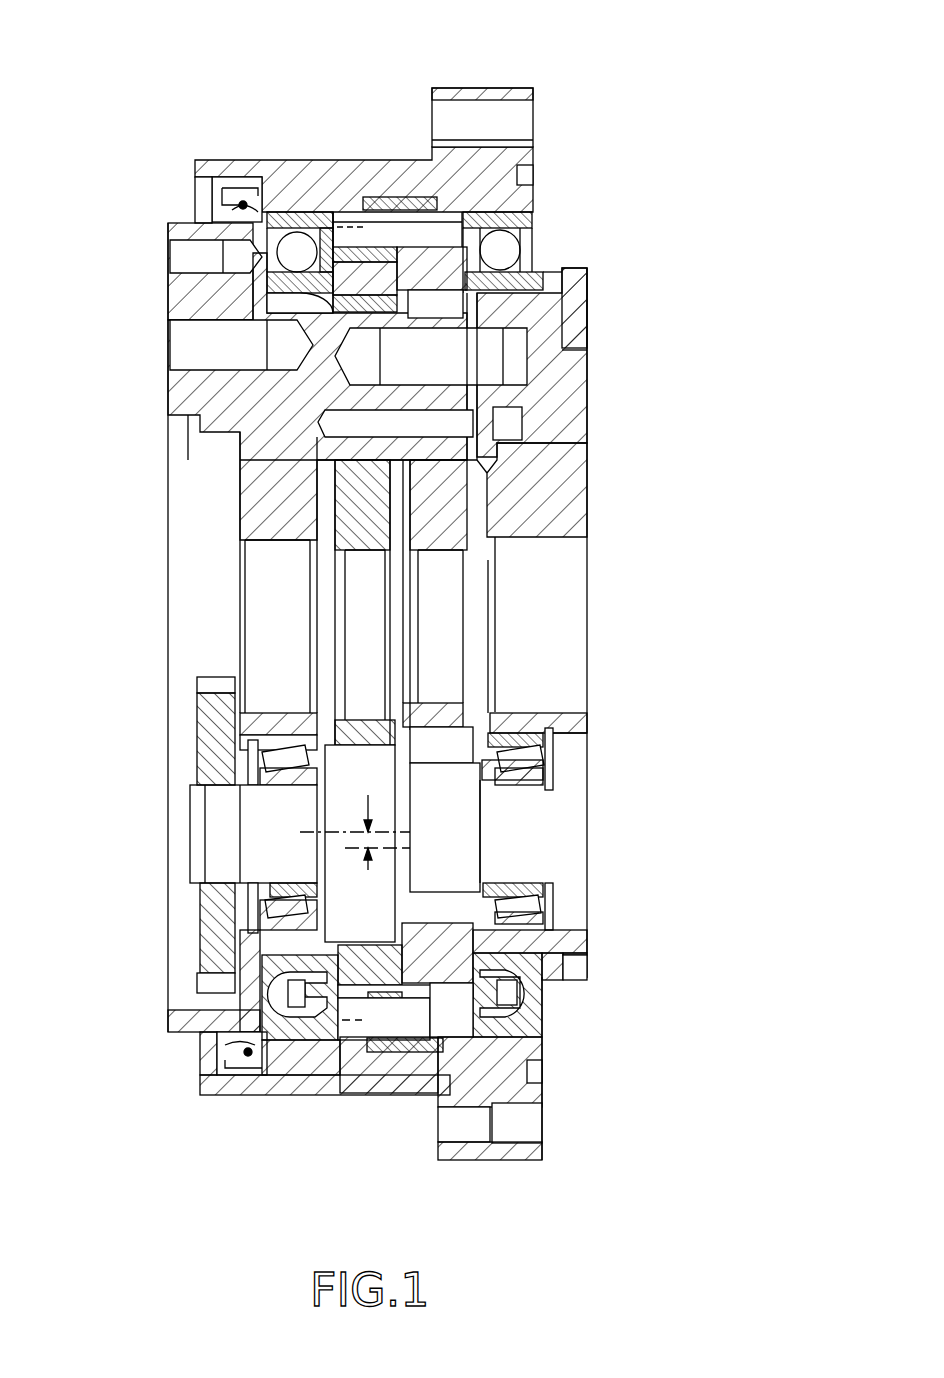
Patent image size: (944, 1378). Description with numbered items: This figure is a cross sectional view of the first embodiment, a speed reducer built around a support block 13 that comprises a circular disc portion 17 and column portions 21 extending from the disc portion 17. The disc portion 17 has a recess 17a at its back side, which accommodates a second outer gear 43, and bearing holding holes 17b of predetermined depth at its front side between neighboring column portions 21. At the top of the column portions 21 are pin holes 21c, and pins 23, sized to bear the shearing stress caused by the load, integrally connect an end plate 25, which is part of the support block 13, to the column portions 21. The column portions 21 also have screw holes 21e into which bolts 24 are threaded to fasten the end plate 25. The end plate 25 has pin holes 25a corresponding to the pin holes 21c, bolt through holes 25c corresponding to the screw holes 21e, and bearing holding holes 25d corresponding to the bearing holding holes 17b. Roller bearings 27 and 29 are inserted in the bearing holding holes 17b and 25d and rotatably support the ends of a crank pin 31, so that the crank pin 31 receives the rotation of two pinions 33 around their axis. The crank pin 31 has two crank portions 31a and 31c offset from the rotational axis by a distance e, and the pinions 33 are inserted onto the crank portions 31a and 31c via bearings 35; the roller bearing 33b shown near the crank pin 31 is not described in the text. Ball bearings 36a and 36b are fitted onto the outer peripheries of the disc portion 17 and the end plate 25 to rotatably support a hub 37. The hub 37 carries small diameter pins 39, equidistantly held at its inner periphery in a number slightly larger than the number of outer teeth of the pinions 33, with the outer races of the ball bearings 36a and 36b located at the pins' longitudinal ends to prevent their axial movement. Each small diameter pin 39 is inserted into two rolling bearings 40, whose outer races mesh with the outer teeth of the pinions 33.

The support block 13 is at (182, 222).
The circular disc portion 17 is at (195, 383).
The recess 17a is at (200, 445).
The bearing holding holes 17b is at (247, 913).
The column portions 21 is at (565, 382).
The pin holes 21c is at (320, 428).
The screw holes 21e is at (565, 290).
The pins 23 is at (565, 418).
The bolts 24 is at (575, 345).
The end plate 25 is at (572, 475).
The pin holes 25a is at (565, 435).
The bolt through holes 25c is at (570, 365).
The bearing holding holes 25d is at (488, 942).
The roller bearing 27 is at (262, 745).
The roller bearing 29 is at (533, 743).
The crank pin 31 is at (520, 838).
The crank portion 31a is at (333, 860).
The crank portion 31c is at (450, 843).
The pinions 33 is at (370, 960).
The bearing 33b is at (445, 920).
The bearings 35 is at (448, 748).
The ball bearing 36a is at (302, 220).
The ball bearing 36b is at (520, 220).
The hub 37 is at (333, 158).
The small diameter pins 39 is at (437, 237).
The rolling bearings 40 is at (410, 158).
The second outer gear 43 is at (203, 970).